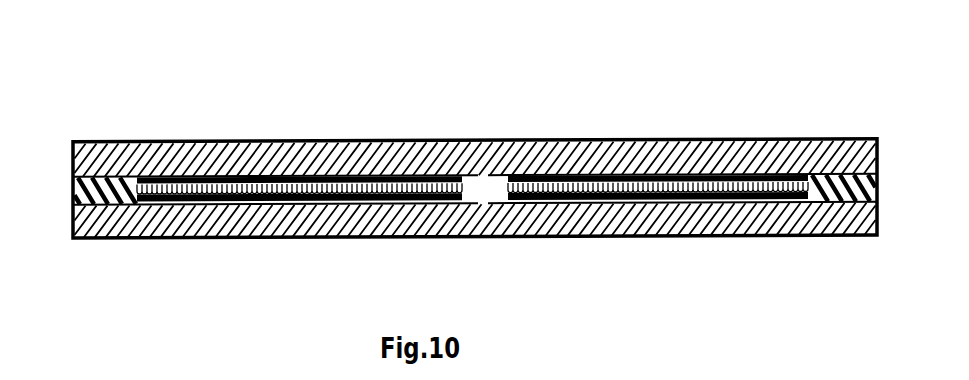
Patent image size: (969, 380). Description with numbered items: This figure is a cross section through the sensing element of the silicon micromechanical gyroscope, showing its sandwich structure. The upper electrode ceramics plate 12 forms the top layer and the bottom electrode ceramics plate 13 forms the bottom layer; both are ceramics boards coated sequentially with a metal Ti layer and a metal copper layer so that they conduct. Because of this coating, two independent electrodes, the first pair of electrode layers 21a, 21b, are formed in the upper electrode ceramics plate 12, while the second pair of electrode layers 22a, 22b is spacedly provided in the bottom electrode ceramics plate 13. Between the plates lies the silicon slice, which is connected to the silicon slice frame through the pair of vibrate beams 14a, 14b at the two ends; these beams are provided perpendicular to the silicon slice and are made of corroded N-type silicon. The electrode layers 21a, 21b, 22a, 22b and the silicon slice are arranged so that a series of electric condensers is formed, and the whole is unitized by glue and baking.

The upper electrode ceramics plate 12 is at (183, 136).
The bottom electrode ceramics plate 13 is at (160, 258).
The vibrate beam 14a is at (223, 160).
The vibrate beam 14b is at (734, 158).
The electrode layer 21a is at (383, 158).
The electrode layer 22a is at (372, 214).
The electrode layer 21b is at (640, 158).
The electrode layer 22b is at (641, 214).